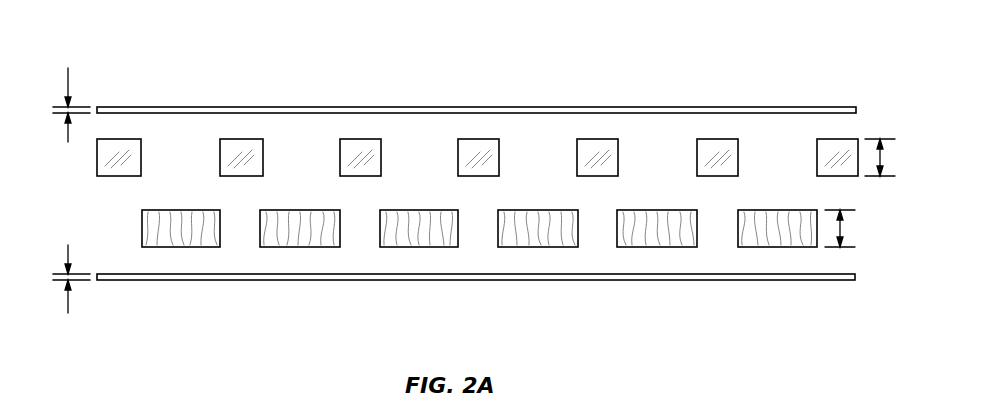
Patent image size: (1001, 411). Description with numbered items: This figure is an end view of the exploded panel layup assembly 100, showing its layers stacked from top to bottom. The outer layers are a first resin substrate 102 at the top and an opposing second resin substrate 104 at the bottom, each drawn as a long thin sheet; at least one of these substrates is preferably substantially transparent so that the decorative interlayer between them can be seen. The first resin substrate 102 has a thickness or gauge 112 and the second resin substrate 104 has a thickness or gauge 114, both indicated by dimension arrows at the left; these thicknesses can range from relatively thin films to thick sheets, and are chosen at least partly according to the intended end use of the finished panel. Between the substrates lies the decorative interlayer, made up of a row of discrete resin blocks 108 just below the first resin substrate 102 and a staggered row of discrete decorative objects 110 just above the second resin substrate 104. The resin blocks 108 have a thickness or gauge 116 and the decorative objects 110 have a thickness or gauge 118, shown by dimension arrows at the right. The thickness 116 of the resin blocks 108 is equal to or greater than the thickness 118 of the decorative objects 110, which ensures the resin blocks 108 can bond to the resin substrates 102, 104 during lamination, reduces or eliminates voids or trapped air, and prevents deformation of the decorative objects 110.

The panel layup assembly 100 is at (110, 46).
The first resin substrate 102 is at (713, 107).
The second resin substrate 104 is at (743, 276).
The resin blocks 108 is at (100, 150).
The decorative objects 110 is at (262, 213).
The thickness of first resin substrate 112 is at (68, 72).
The thickness of second resin substrate 114 is at (68, 310).
The thickness of resin blocks 116 is at (880, 157).
The thickness of decorative objects 118 is at (843, 223).